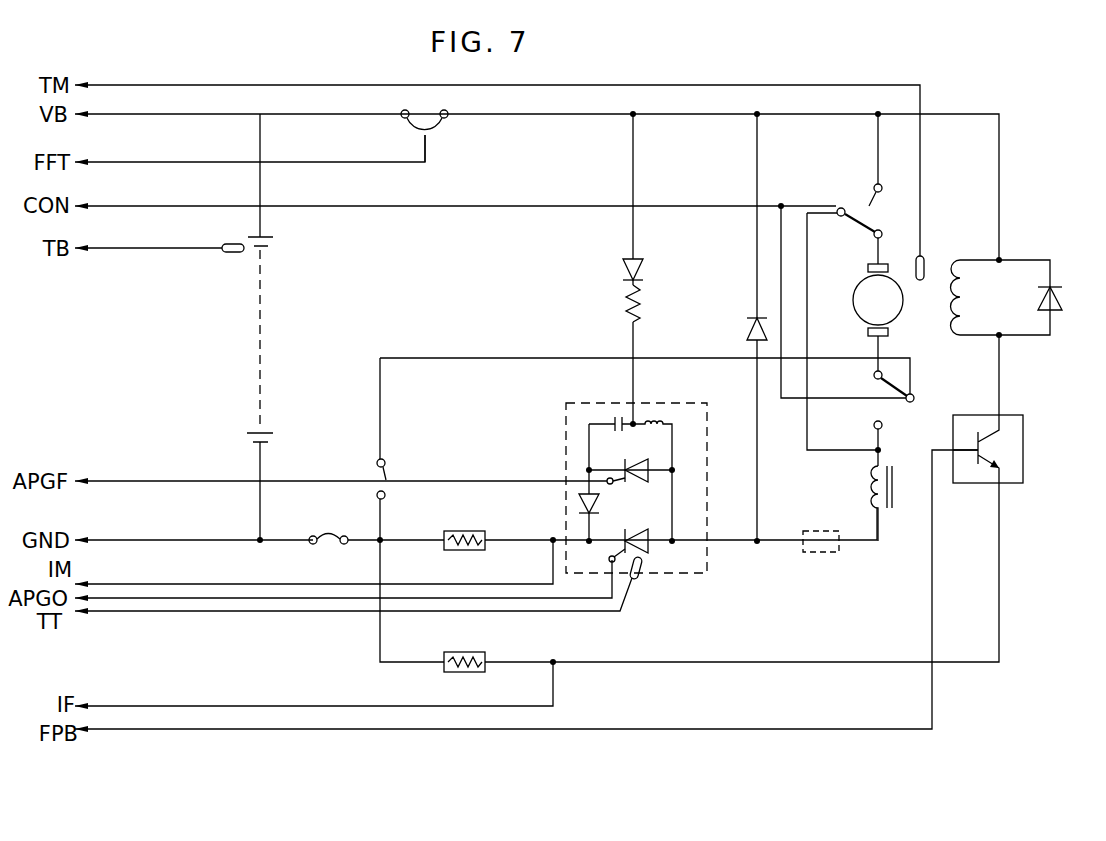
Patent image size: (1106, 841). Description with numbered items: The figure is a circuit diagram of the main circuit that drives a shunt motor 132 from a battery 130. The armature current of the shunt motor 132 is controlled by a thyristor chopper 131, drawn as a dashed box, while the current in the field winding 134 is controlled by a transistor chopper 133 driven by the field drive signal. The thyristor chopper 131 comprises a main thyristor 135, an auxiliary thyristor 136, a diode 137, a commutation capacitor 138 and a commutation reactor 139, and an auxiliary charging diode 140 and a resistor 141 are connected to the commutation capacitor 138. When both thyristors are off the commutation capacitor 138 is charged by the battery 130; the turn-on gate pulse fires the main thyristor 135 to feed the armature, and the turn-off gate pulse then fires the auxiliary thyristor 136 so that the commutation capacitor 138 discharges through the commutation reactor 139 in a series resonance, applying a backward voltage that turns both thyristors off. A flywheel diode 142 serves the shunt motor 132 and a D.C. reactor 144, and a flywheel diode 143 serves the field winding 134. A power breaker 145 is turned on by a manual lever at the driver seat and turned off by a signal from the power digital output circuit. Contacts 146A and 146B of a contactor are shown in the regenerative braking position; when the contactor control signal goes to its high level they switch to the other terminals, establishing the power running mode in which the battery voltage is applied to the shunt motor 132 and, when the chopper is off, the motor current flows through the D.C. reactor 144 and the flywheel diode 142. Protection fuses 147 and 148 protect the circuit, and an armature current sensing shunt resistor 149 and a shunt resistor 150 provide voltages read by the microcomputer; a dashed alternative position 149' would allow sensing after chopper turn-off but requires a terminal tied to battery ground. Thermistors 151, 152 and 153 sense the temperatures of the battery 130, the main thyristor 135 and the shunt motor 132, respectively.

The battery 130 is at (277, 434).
The thyristor chopper 131 is at (707, 548).
The shunt motor 132 is at (903, 300).
The transistor chopper 133 is at (1008, 483).
The field winding 134 is at (968, 279).
The main thyristor 135 is at (628, 531).
The auxiliary thyristor 136 is at (656, 457).
The diode 137 is at (580, 488).
The commutation capacitor 138 is at (615, 417).
The commutation reactor 139 is at (653, 422).
The auxiliary charging diode 140 is at (645, 264).
The resistor 141 is at (641, 308).
The flywheel diode 142 is at (751, 318).
The flywheel diode 143 is at (1037, 297).
The D.C. reactor 144 is at (868, 490).
The power breaker 145 is at (446, 118).
The contact of contactor 146A is at (868, 217).
The contact of contactor 146B is at (898, 402).
The protection fuse 147 is at (340, 536).
The protection fuse 148 is at (388, 471).
The armature current sensing shunt resistor 149 is at (480, 525).
The shunt resistor position 149' is at (848, 553).
The armature current sensing shunt resistor 150 is at (480, 652).
The thermistor 151 is at (233, 254).
The thermistor 152 is at (640, 575).
The thermistor 153 is at (926, 266).